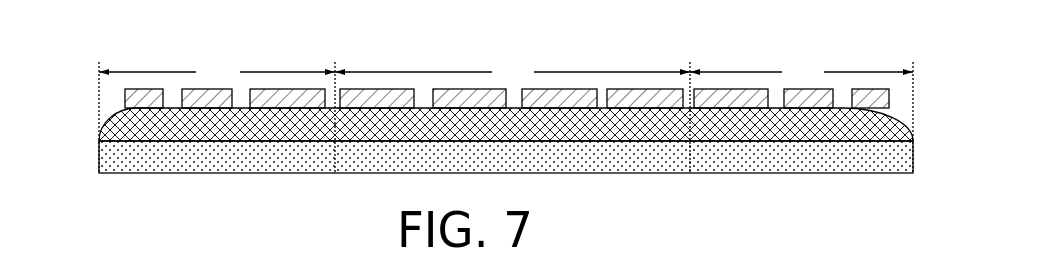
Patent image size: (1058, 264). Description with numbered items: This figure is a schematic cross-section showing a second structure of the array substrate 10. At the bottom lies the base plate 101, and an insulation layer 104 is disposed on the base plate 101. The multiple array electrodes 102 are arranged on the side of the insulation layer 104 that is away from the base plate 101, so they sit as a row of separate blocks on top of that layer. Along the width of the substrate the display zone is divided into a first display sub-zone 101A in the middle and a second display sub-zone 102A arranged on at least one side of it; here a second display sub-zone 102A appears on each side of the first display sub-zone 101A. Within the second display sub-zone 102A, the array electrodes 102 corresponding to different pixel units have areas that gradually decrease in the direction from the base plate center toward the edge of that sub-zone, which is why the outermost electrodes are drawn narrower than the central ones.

The array substrate 10 is at (82, 74).
The base plate 101 is at (905, 161).
The first display sub-zone 101A is at (512, 73).
The array electrodes 102 is at (885, 100).
The second display sub-zone 102A is at (506, 73).
The insulation layer 104 is at (906, 128).